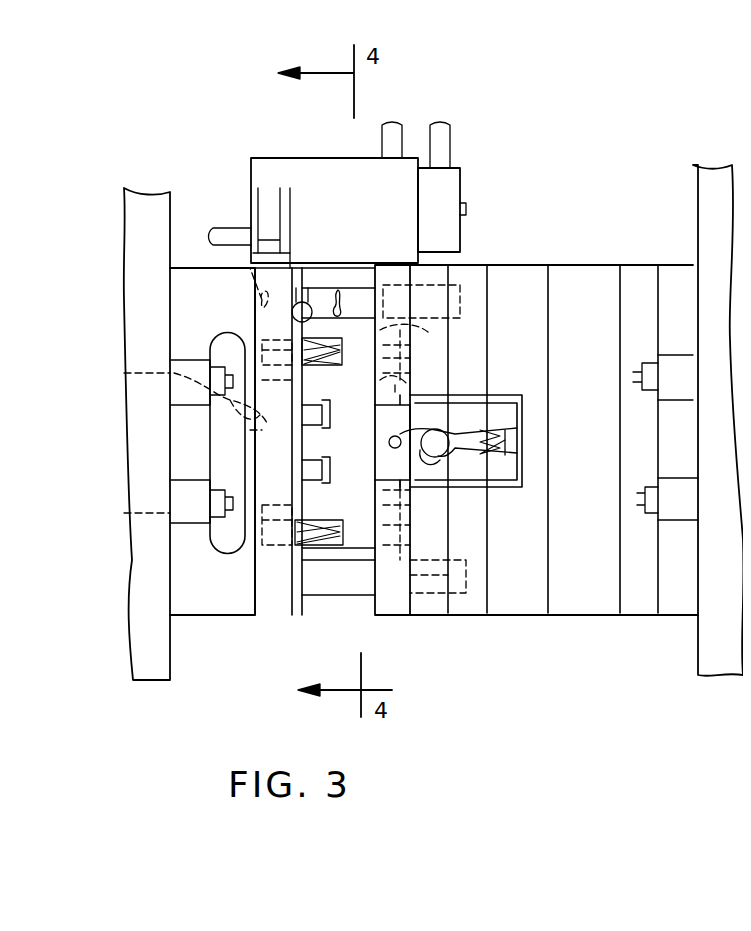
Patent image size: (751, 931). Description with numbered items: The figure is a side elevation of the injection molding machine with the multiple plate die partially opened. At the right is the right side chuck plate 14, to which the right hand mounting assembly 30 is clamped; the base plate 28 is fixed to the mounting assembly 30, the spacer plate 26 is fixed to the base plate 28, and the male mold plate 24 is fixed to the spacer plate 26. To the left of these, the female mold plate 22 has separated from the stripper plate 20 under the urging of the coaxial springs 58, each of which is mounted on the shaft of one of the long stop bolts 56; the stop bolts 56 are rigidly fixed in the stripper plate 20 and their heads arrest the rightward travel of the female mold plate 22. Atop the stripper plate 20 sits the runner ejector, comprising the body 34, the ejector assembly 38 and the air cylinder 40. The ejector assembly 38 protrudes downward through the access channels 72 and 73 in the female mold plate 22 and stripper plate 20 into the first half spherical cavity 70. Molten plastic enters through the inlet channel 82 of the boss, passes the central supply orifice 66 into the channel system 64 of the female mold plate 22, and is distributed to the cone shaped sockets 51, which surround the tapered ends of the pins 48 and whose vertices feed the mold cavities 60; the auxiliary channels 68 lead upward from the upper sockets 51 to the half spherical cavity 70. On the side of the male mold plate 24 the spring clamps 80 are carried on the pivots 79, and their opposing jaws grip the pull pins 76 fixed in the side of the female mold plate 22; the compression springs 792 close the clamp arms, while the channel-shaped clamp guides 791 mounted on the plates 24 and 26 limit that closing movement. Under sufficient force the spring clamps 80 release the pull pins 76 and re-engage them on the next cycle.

The right side chuck plate 14 is at (706, 225).
The stripper plate 20 is at (280, 610).
The female mold plate 22 is at (386, 612).
The male mold plate 24 is at (436, 614).
The spacer plate 26 is at (470, 606).
The base plate 28 is at (546, 540).
The right hand mounting assembly 30 is at (610, 262).
The body 34 is at (356, 194).
The ejector assembly 38 is at (297, 276).
The air cylinder 40 is at (438, 194).
The pins 48 is at (218, 535).
The cone shaped sockets 51 is at (408, 380).
The long stop bolts 56 is at (362, 548).
The coaxial spring 58 is at (322, 520).
The mold cavities 60 is at (425, 530).
The system of channels 64 is at (378, 385).
The central supply orifice 66 is at (290, 420).
The auxiliary channels 68 is at (420, 330).
The first half spherical cavity 70 is at (421, 301).
The access channel 72 is at (372, 278).
The access channel 73 is at (285, 268).
The pull pins 76 is at (420, 438).
The pivots 79 is at (442, 452).
The spring clamps 80 is at (525, 440).
The inlet channel 82 is at (170, 404).
The channel-shaped clamp guides 791 is at (514, 452).
The compression springs 792 is at (514, 432).